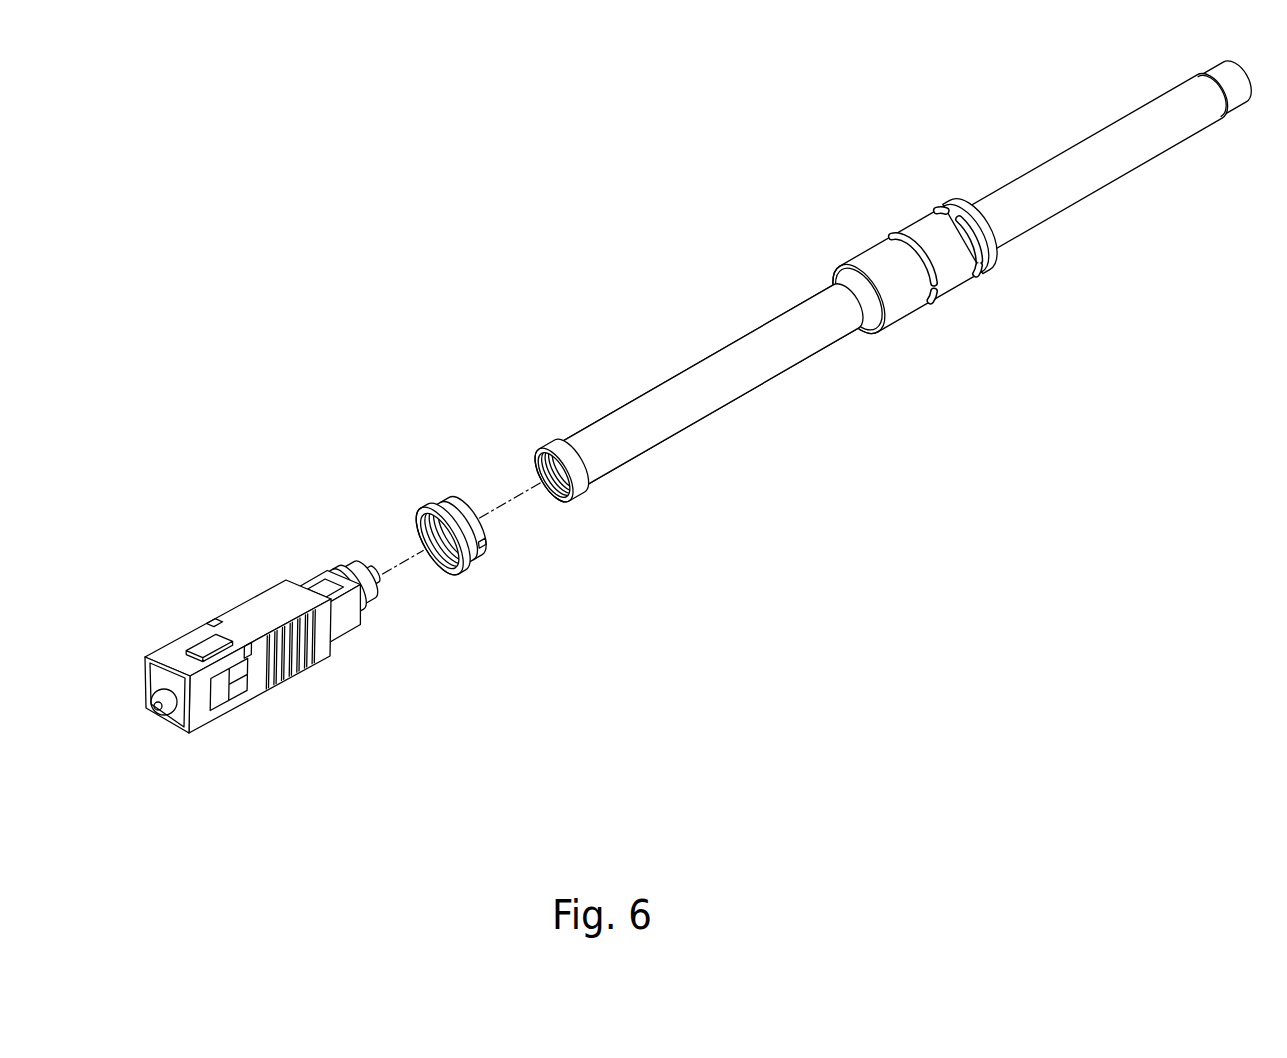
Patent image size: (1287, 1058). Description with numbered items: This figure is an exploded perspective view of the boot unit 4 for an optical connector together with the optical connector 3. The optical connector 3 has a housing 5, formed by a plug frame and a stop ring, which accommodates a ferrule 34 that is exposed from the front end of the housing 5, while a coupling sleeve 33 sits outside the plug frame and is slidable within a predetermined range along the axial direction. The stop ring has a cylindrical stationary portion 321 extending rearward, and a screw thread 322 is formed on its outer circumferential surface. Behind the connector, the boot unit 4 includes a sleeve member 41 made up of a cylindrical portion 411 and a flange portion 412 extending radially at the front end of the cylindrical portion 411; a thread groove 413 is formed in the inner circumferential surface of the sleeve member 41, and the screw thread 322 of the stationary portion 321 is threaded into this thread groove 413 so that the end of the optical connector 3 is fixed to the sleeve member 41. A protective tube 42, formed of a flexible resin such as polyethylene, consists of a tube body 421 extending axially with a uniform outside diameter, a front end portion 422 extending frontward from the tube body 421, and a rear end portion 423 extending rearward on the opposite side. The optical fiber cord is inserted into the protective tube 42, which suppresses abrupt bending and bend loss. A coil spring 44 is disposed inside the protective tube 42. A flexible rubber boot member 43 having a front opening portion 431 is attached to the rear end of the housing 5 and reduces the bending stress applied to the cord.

The optical connector 3 is at (267, 628).
The boot unit 4 is at (815, 324).
The housing 5 is at (706, 410).
The coupling sleeve 33 is at (318, 658).
The ferrule 34 is at (166, 707).
The stationary portion 321 is at (365, 580).
The screw thread 322 is at (343, 592).
The sleeve member 41 is at (452, 534).
The cylindrical portion 411 is at (482, 543).
The flange portion 412 is at (462, 527).
The thread groove 413 is at (443, 539).
The protective tube 42 is at (908, 270).
The tube body 421 is at (896, 277).
The front end portion 422 is at (561, 470).
The rear end portion 423 is at (1228, 85).
The boot member 43 is at (914, 267).
The front opening portion 431 is at (859, 299).
The coil spring 44 is at (561, 471).